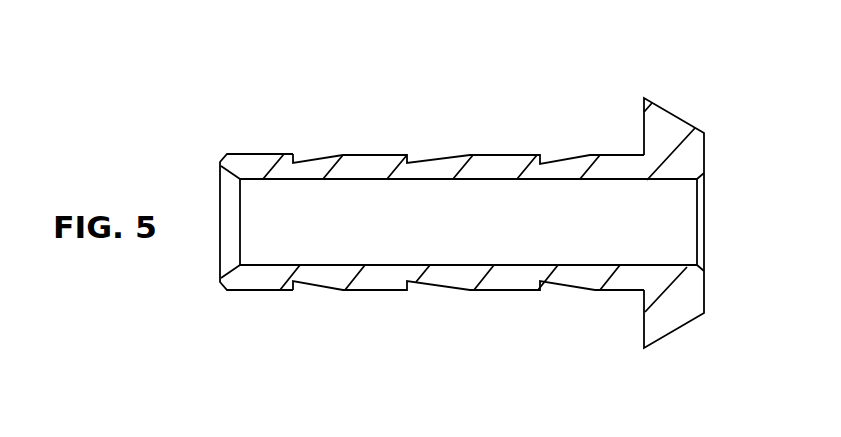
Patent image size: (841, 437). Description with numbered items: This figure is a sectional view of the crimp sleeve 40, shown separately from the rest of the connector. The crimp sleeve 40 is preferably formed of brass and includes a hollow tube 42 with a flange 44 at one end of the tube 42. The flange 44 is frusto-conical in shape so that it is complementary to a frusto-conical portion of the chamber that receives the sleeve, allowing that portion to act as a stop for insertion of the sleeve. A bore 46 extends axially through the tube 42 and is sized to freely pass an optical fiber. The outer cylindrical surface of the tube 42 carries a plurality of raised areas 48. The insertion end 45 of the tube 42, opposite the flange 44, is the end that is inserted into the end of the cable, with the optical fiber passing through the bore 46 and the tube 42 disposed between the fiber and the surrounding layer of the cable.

The crimp sleeve 40 is at (358, 101).
The hollow tube 42 is at (255, 152).
The flange 44 is at (675, 113).
The insertion end 45 is at (240, 265).
The bore 46 is at (452, 232).
The raised areas 48 is at (500, 154).